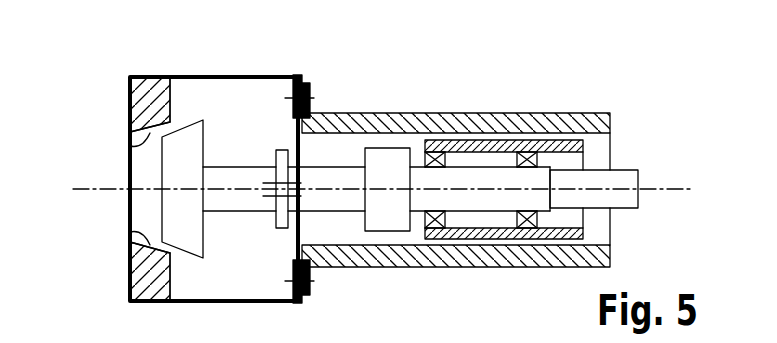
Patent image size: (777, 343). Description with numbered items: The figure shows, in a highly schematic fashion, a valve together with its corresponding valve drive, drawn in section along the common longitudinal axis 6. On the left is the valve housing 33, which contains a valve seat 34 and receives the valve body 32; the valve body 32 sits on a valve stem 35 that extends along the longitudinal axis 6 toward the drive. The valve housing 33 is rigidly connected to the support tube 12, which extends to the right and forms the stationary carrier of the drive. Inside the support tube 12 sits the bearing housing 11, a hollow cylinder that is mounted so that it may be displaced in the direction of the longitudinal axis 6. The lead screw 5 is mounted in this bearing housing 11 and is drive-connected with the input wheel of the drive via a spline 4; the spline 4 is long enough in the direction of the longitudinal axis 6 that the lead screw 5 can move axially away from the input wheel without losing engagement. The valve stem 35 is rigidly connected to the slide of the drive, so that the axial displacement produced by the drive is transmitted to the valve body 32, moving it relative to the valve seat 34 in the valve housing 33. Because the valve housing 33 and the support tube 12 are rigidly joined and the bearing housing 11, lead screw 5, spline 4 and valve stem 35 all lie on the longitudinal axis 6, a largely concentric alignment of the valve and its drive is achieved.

The valve housing 33 is at (193, 75).
The valve seat 34 is at (130, 146).
The valve body 32 is at (162, 214).
The valve stem 35 is at (233, 165).
The spline 4 is at (398, 232).
The support tube 12 is at (393, 126).
The bearing housing 11 is at (485, 139).
The lead screw 5 is at (625, 170).
The longitudinal axis 6 is at (674, 189).